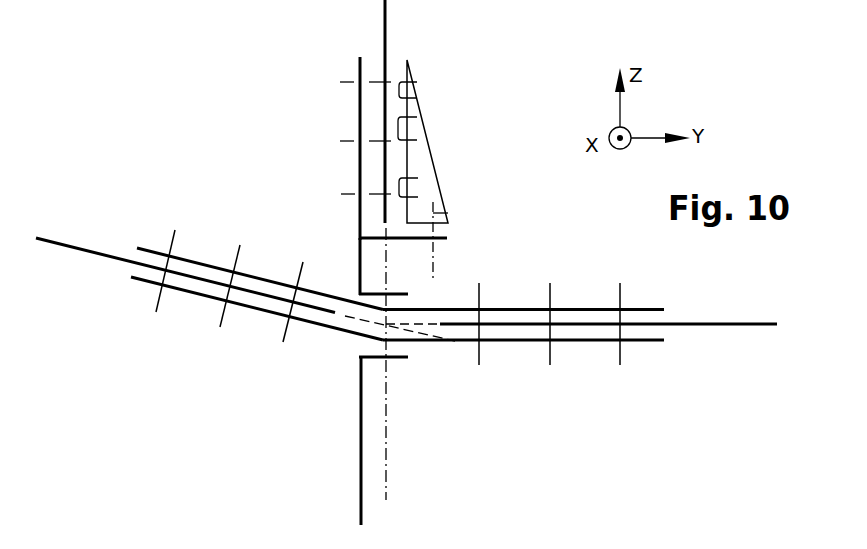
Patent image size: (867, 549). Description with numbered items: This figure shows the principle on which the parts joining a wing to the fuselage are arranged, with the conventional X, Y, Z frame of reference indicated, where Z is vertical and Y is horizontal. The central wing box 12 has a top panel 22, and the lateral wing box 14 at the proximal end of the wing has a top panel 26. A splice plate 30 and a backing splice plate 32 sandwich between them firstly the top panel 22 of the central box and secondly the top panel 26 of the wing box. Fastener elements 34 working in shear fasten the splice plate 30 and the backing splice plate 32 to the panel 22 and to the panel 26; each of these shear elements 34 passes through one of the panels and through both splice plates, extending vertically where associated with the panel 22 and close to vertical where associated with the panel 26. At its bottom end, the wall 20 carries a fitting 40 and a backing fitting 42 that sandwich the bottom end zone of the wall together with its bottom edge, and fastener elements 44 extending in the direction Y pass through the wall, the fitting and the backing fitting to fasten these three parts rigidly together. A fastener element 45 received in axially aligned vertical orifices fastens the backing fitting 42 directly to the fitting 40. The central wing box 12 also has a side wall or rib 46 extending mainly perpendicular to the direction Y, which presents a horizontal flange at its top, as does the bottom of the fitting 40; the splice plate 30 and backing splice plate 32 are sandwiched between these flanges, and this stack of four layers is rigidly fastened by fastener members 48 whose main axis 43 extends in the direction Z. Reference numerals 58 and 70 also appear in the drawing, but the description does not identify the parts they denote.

The central wing box 12 is at (510, 455).
The lateral wing box 14 is at (257, 345).
The wall 20 is at (383, 15).
The top panel of the central box 22 is at (708, 323).
The top panel of the wing box 26 is at (70, 243).
The splice plate 30 is at (302, 322).
The backing splice plate 32 is at (498, 308).
The fastener elements 34 is at (153, 298).
The fitting 40 is at (358, 105).
The backing fitting 42 is at (418, 157).
The main axis 43 is at (383, 285).
The fastener elements 44 is at (417, 117).
The fastener element 45 is at (445, 213).
The side wall or rib 46 is at (360, 460).
The fastener members 48 is at (387, 362).
The connector 58 is at (653, 548).
The base member 70 is at (462, 543).